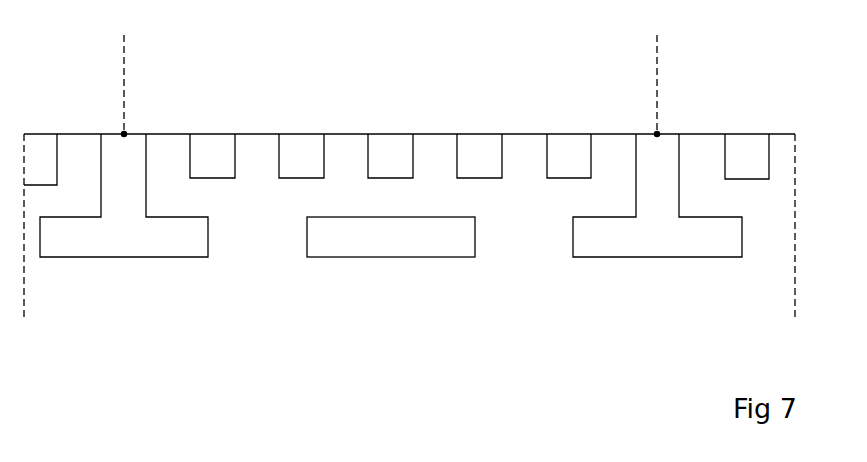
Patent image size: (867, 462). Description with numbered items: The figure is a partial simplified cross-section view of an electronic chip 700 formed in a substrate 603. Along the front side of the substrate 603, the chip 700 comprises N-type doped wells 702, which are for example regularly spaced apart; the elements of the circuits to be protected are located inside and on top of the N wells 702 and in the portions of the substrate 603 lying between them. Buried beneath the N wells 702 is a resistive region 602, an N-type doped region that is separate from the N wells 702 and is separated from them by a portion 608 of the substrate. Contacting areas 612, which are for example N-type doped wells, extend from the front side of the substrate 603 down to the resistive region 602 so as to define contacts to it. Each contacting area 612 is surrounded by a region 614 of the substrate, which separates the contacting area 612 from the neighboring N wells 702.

The electronic chip 700 is at (87, 325).
The resistive region 602 is at (145, 248).
The substrate 603 is at (186, 305).
The portion of the substrate 608 is at (321, 194).
The contacting area 612 is at (113, 142).
The region of the substrate 614 is at (165, 150).
The N-type doped well 702 is at (387, 140).